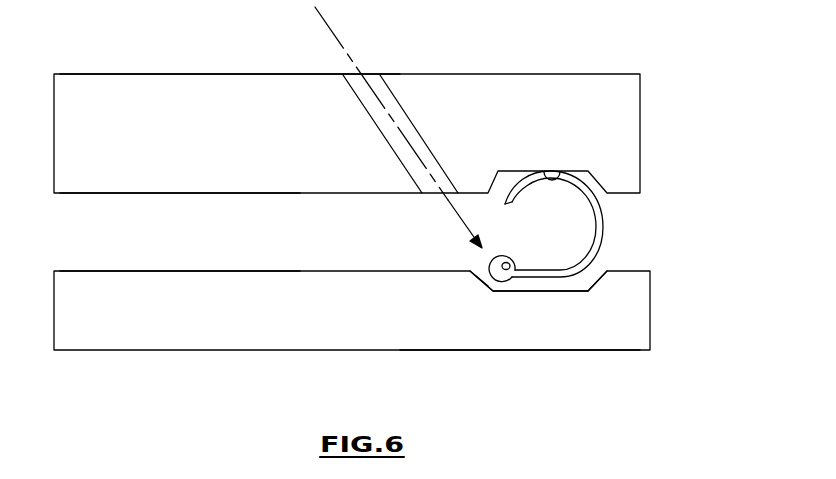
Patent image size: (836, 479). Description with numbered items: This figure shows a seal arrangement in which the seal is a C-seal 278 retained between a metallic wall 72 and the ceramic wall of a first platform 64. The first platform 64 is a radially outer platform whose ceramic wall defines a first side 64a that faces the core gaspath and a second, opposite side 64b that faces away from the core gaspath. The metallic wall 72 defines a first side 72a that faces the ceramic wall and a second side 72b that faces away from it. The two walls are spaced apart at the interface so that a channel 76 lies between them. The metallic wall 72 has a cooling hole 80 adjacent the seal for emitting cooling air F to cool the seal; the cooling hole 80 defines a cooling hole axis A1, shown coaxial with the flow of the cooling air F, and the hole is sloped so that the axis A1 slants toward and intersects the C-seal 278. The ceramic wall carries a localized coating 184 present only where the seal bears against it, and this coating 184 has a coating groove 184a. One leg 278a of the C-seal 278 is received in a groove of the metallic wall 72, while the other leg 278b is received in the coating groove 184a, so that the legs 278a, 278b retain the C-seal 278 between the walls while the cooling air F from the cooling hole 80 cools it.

The metallic wall 72 is at (530, 74).
The first side of the metallic wall 72a is at (190, 193).
The second side of the metallic wall 72b is at (168, 74).
The cooling hole 80 is at (392, 90).
The cooling hole axis A1 is at (369, 80).
The cooling air F is at (452, 210).
The channel 76 is at (327, 244).
The C-seal 278 is at (592, 162).
The leg of the C-seal 278a is at (557, 186).
The leg of the C-seal 278b is at (548, 236).
The first platform 64 is at (651, 315).
The first side of the first platform 64a is at (593, 352).
The second side of the first platform 64b is at (180, 271).
The coating 184 is at (604, 270).
The coating groove 184a is at (486, 286).